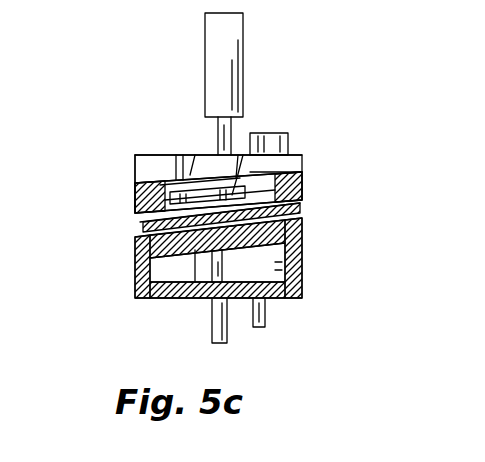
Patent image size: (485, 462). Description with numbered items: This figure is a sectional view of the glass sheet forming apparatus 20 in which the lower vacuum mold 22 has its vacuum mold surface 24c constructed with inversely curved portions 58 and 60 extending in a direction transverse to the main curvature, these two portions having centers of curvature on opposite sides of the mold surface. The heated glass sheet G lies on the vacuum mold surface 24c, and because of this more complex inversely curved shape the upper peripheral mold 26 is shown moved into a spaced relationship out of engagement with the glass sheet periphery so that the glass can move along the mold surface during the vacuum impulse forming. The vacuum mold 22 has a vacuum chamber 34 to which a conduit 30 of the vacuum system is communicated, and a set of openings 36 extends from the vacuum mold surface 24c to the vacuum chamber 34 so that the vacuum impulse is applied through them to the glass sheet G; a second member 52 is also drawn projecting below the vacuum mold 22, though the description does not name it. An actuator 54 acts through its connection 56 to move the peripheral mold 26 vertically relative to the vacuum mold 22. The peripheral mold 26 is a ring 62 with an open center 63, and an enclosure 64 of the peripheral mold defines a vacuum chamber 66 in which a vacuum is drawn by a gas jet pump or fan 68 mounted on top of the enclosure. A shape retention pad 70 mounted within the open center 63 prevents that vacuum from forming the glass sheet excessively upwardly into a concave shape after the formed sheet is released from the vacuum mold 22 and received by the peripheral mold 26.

The apparatus 20 is at (378, 133).
The vacuum mold 22 is at (134, 277).
The vacuum mold surface 24c is at (197, 283).
The peripheral mold 26 is at (312, 152).
The conduit 30 is at (268, 316).
The vacuum chamber 34 is at (270, 268).
The openings 36 is at (300, 229).
The pin 52 is at (228, 338).
The actuator 54 is at (245, 48).
The connection 56 is at (215, 153).
The inversely curved portion 58 is at (290, 210).
The inversely curved portion 60 is at (122, 248).
The ring 62 is at (305, 187).
The open center 63 is at (185, 155).
The enclosure 64 is at (163, 192).
The vacuum chamber 66 is at (150, 165).
The gas jet pump or fan 68 is at (290, 150).
The shape retention pad 70 is at (243, 155).
The glass sheet G is at (145, 228).